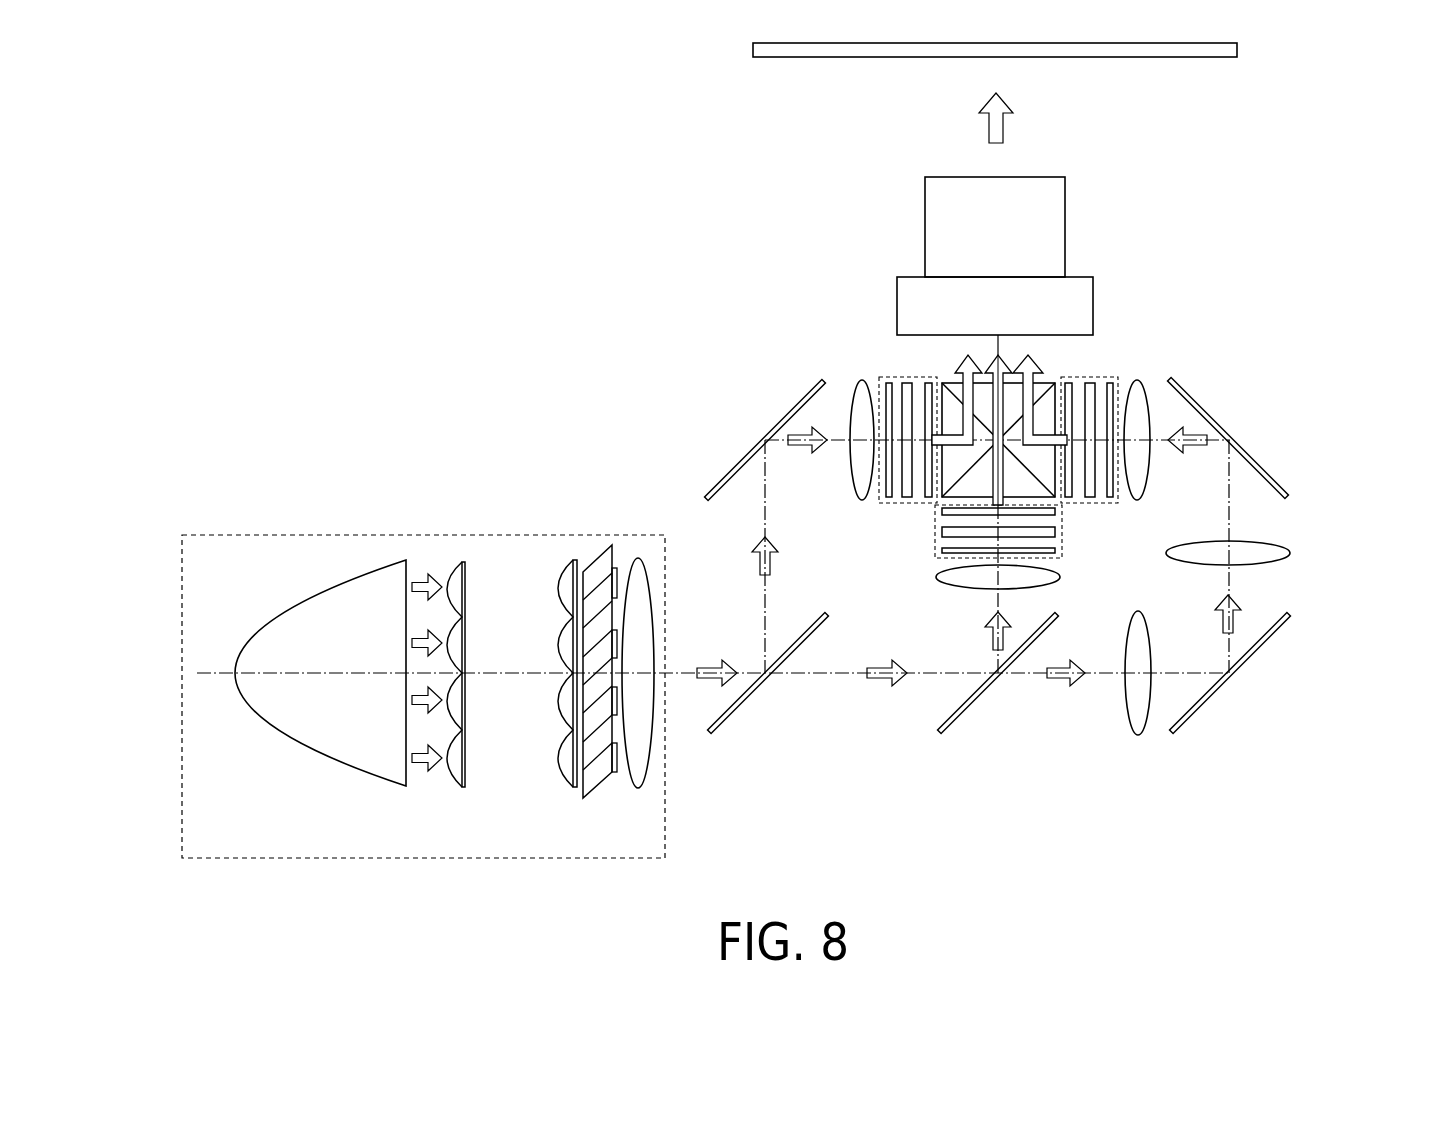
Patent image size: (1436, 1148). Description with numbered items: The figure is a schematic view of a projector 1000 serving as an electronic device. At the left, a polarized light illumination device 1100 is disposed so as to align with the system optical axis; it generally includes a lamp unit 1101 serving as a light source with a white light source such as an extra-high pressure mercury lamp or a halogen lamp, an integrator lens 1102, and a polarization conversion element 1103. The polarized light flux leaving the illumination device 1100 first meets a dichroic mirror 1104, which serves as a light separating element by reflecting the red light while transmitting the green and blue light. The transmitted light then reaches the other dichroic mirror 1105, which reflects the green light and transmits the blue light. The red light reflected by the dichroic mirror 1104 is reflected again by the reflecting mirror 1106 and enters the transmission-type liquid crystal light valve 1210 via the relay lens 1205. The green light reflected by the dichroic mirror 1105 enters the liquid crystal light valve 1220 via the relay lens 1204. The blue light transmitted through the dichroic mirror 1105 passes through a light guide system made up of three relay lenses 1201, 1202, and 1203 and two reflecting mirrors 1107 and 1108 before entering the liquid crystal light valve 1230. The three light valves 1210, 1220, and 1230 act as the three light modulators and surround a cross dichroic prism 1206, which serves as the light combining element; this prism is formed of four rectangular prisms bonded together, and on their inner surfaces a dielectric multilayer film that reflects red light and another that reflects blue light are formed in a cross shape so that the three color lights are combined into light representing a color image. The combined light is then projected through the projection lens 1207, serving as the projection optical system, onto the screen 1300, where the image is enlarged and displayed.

The projector 1000 is at (1302, 178).
The polarized light illumination device 1100 is at (437, 533).
The lamp unit 1101 is at (315, 763).
The integrator lens 1102 is at (458, 790).
The polarization conversion element 1103 is at (655, 802).
The dichroic mirror 1104 is at (725, 722).
The dichroic mirror 1105 is at (958, 722).
The reflecting mirror 1106 is at (767, 437).
The reflecting mirror 1107 is at (1193, 722).
The reflecting mirror 1108 is at (1229, 437).
The relay lens 1201 is at (1135, 738).
The relay lens 1202 is at (1290, 553).
The relay lens 1203 is at (1137, 500).
The relay lens 1204 is at (938, 583).
The relay lens 1205 is at (862, 500).
The cross dichroic prism 1206 is at (1032, 377).
The projection lens 1207 is at (1056, 222).
The liquid crystal light valve 1210 is at (899, 377).
The liquid crystal light valve 1220 is at (1062, 556).
The liquid crystal light valve 1230 is at (1100, 377).
The screen 1300 is at (1158, 59).